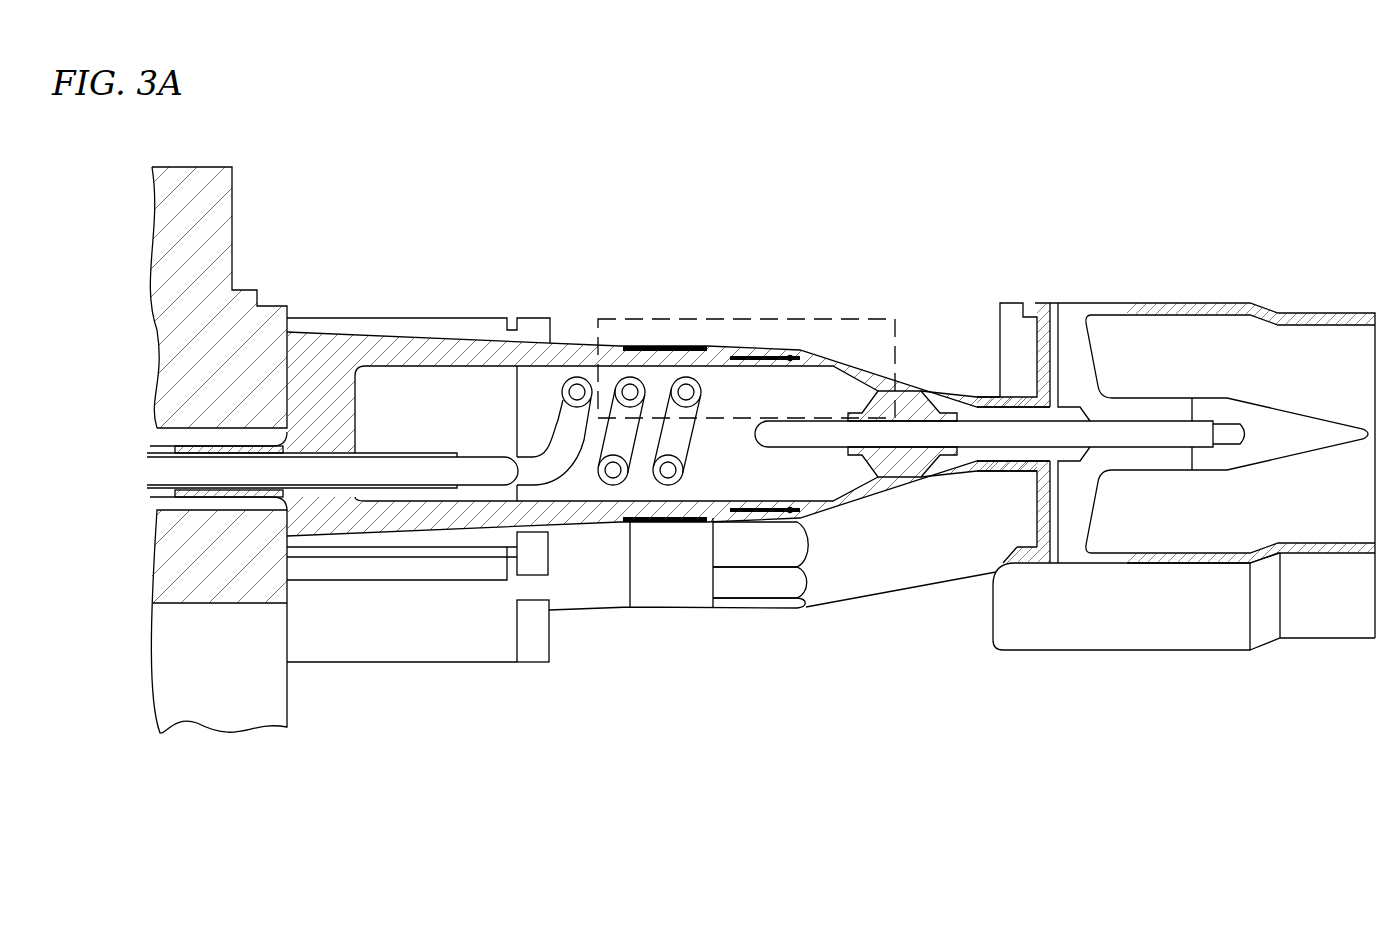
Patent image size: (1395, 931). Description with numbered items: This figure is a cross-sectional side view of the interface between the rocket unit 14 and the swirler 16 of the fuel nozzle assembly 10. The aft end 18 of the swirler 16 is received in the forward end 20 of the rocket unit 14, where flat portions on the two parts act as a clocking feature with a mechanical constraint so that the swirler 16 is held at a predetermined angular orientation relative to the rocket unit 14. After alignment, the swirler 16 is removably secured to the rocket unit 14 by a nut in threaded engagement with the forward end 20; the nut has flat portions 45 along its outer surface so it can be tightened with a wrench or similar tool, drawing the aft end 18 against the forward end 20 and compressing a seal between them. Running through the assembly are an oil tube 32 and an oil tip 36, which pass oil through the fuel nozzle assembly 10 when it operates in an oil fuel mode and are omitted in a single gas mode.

The fuel nozzle assembly 10 is at (1082, 193).
The rocket unit 14 is at (414, 333).
The swirler 16 is at (1193, 303).
The aft end of the swirler 18 is at (920, 380).
The forward end of the rocket unit 20 is at (577, 350).
The oil tube 32 is at (392, 470).
The oil tip 36 is at (1282, 407).
The flat portions of the nut 45 is at (753, 583).